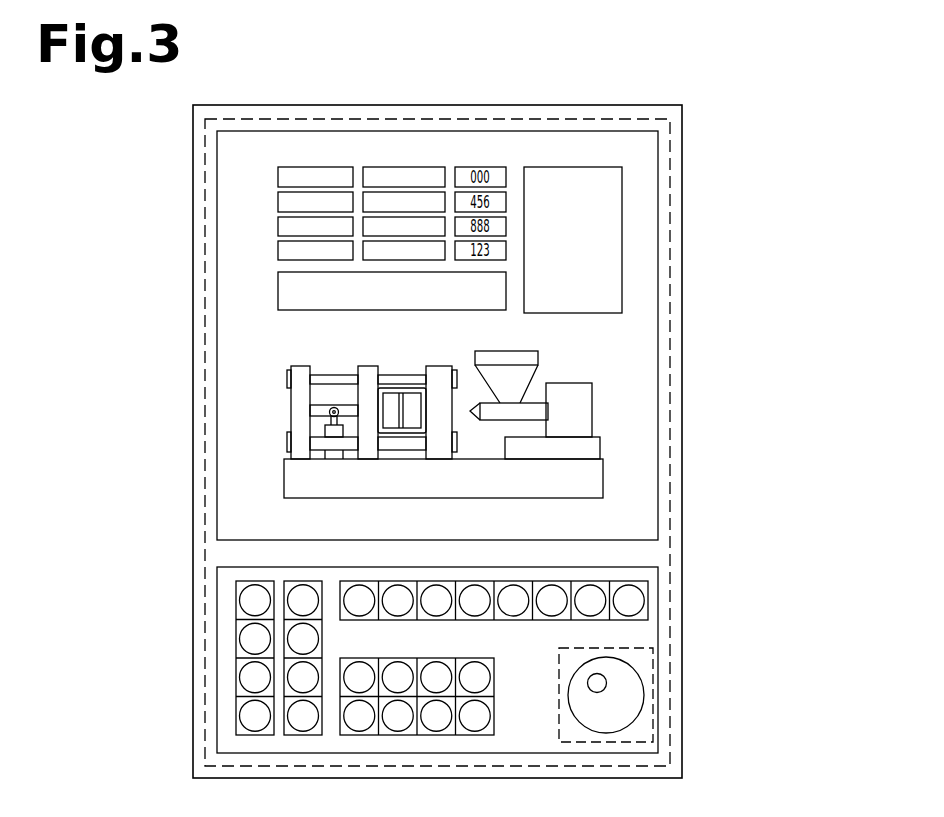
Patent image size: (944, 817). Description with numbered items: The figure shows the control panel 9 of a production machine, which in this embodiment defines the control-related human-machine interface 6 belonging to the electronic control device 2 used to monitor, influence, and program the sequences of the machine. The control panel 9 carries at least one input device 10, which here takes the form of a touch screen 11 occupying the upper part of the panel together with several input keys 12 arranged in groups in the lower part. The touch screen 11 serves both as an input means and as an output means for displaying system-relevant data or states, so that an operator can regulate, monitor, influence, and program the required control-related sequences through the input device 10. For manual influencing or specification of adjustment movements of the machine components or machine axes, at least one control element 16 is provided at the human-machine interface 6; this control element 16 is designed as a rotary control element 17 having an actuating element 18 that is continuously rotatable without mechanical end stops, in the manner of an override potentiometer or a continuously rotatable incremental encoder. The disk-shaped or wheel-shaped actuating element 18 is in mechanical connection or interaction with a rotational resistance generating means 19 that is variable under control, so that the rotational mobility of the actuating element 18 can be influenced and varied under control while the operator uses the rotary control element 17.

The electronic control device 2 is at (234, 118).
The human-machine interface 6 is at (689, 94).
The control panel 9 is at (677, 257).
The input device 10 is at (402, 129).
The touch screen 11 is at (625, 372).
The input keys 12 is at (630, 601).
The control element 16 is at (659, 754).
The rotary control element 17 is at (650, 693).
The actuating element 18 is at (635, 678).
The rotational resistance generating means 19 is at (628, 656).